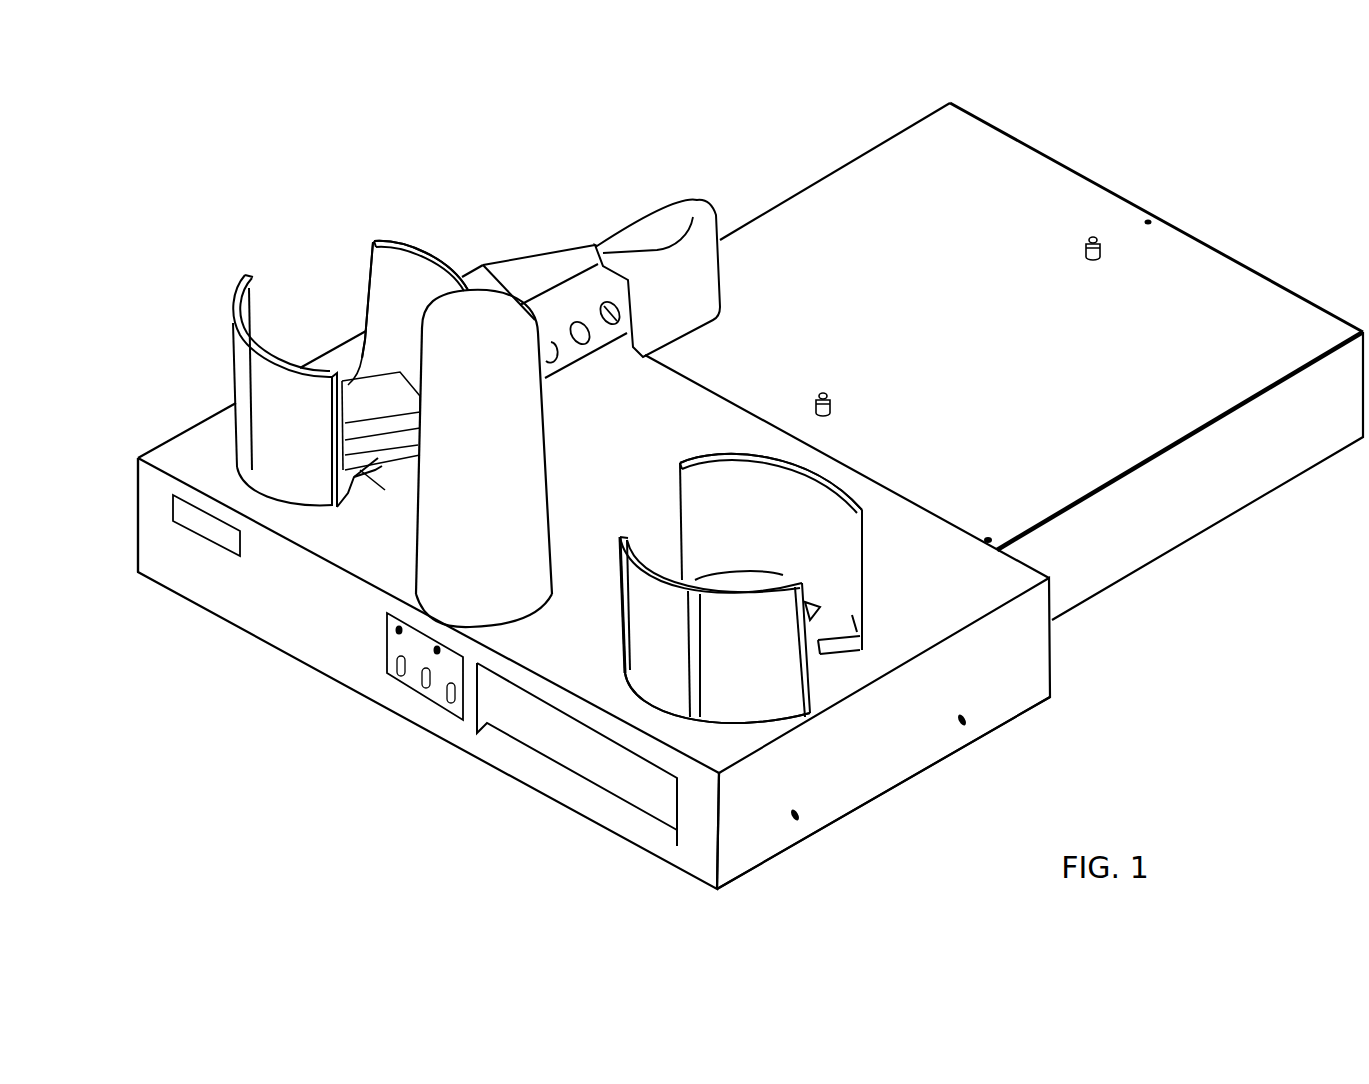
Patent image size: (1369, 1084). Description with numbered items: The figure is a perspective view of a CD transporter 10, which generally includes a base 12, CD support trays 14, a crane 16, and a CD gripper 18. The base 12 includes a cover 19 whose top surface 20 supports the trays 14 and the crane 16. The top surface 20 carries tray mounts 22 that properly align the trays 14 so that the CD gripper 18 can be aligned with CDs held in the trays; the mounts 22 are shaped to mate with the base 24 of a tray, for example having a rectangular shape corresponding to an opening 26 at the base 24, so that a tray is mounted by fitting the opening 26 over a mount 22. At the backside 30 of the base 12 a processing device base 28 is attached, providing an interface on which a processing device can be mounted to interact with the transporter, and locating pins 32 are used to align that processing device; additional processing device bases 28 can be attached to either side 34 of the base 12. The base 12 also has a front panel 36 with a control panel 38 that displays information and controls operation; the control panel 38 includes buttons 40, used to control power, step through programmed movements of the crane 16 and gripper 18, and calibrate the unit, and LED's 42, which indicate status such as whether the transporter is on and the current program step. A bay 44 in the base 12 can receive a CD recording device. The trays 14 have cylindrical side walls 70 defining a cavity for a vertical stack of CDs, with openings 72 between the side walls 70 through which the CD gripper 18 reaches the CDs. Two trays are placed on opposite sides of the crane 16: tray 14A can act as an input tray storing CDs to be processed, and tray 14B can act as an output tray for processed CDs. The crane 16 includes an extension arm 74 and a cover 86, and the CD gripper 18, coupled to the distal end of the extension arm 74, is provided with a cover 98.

The CD transporter 10 is at (210, 255).
The base 12 is at (1005, 665).
The CD support trays 14 is at (426, 235).
The input tray 14A is at (741, 588).
The output tray 14B is at (350, 390).
The crane 16 is at (550, 272).
The CD gripper 18 is at (742, 257).
The cover 19 is at (907, 723).
The top surface 20 is at (953, 525).
The tray mounts 22 is at (346, 385).
The base of tray 24 is at (370, 463).
The opening 26 is at (366, 333).
The processing device base 28 is at (1273, 323).
The backside 30 is at (1055, 563).
The locating pins 32 is at (1094, 232).
The side 34 is at (183, 432).
The front panel 36 is at (257, 597).
The control panel 38 is at (387, 667).
The buttons 40 is at (451, 693).
The LED's 42 is at (437, 650).
The bay 44 is at (595, 753).
The cylindrical side walls 70 is at (443, 257).
The openings 72 is at (340, 250).
The extension arm 74 is at (567, 355).
The cover 86 is at (500, 577).
The cover 98 is at (688, 203).